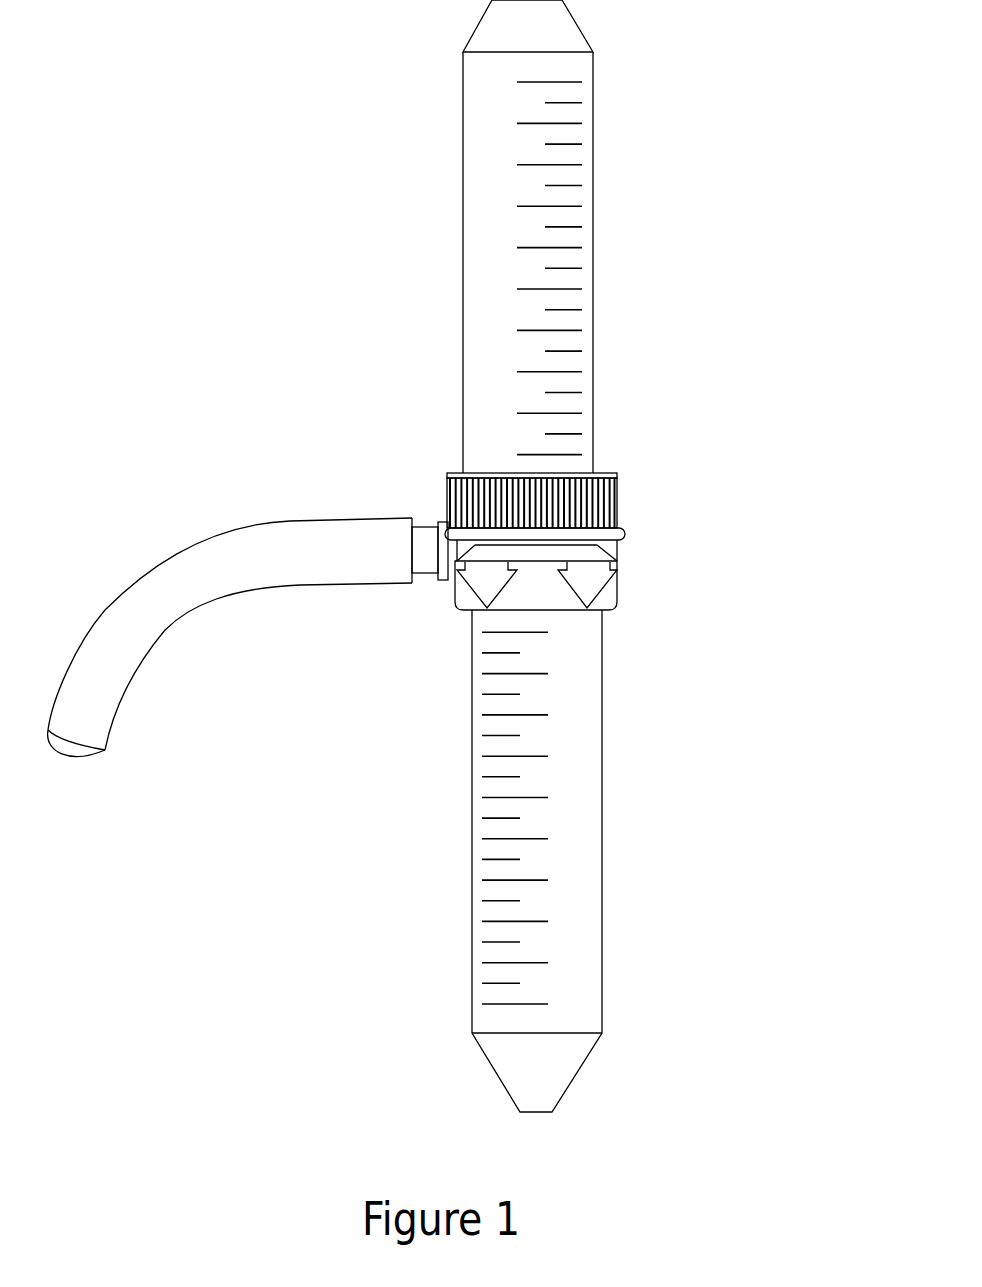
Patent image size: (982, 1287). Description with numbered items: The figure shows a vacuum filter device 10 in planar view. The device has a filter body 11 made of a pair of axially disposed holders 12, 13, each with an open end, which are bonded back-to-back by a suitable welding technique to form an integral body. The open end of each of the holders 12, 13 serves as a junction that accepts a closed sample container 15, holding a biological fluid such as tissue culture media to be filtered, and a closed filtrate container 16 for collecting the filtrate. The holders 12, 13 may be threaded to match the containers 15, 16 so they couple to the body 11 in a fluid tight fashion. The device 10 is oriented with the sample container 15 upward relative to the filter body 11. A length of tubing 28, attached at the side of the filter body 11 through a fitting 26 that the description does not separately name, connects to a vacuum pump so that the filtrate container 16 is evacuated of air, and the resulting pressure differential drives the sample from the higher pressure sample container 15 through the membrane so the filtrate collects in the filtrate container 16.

The vacuum filter device 10 is at (416, 556).
The filter body 11 is at (589, 547).
The holder 12 is at (615, 473).
The holder 13 is at (618, 608).
The sample container 15 is at (593, 247).
The filtrate container 16 is at (602, 817).
The side port fitting 26 is at (427, 583).
The tubing 28 is at (203, 608).